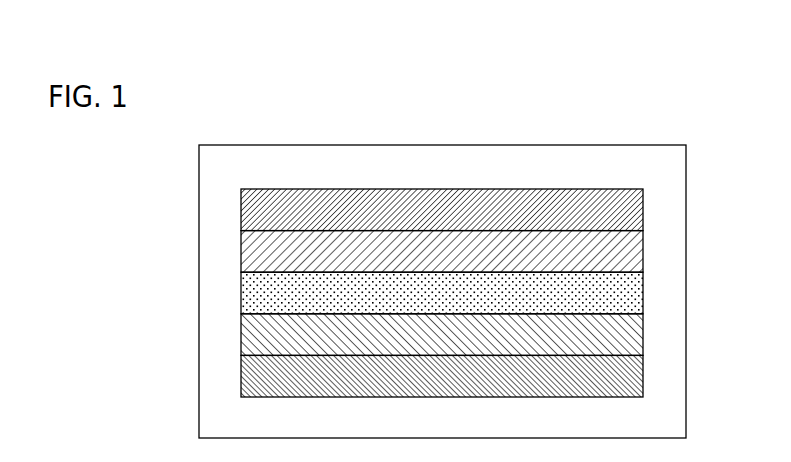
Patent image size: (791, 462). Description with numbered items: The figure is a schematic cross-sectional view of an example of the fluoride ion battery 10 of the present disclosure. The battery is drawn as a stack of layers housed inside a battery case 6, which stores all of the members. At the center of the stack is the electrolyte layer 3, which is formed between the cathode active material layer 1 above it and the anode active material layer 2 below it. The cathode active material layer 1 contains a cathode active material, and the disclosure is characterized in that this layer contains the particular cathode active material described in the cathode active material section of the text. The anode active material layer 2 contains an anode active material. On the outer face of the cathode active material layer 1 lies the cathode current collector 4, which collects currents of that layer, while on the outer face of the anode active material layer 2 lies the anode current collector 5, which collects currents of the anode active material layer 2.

The fluoride ion battery 10 is at (668, 117).
The battery case 6 is at (657, 173).
The cathode current collector 4 is at (615, 213).
The cathode active material layer 1 is at (615, 257).
The electrolyte layer 3 is at (615, 300).
The anode active material layer 2 is at (615, 340).
The anode current collector 5 is at (615, 380).